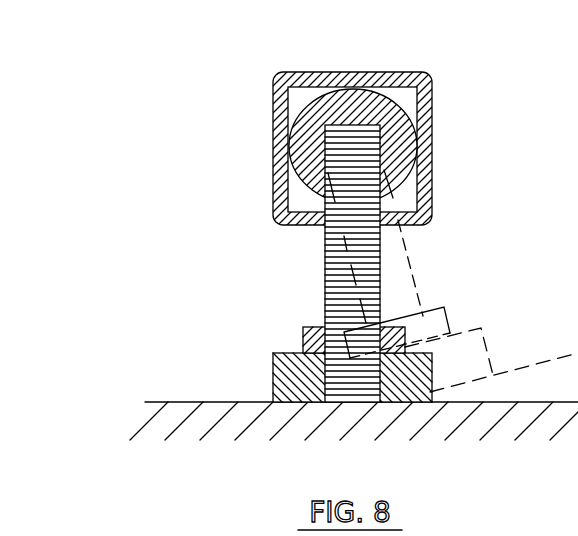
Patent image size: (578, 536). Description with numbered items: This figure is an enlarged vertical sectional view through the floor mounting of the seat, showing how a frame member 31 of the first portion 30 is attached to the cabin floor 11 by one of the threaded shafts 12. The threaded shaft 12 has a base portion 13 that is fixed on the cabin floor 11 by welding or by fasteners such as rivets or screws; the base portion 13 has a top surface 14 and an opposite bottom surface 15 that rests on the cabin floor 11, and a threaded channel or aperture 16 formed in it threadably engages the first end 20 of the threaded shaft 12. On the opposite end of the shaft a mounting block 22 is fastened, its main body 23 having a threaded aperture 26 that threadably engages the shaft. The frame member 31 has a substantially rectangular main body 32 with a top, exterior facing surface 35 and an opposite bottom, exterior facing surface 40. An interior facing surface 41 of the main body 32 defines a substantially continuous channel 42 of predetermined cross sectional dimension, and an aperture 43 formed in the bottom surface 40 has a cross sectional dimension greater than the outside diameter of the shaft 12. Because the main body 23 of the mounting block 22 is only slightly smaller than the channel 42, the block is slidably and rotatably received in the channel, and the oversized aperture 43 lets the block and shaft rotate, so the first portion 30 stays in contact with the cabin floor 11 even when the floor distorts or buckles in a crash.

The cabin floor 11 is at (188, 400).
The threaded shaft 12 is at (325, 263).
The base portion 13 is at (275, 368).
The top surface 14 is at (285, 353).
The bottom surface 15 is at (335, 407).
The threaded channel or aperture 16 is at (443, 307).
The first end 20 is at (436, 362).
The mounting block 22 is at (407, 151).
The main body 23 is at (288, 127).
The threaded aperture 26 is at (385, 127).
The first portion 30 is at (367, 112).
The frame member 31 is at (432, 180).
The main body 32 is at (335, 74).
The top, exterior facing surface 35 is at (380, 72).
The bottom, exterior facing surface 40 is at (410, 222).
The interior facing surface 41 is at (300, 92).
The channel 42 is at (410, 100).
The aperture 43 is at (305, 210).